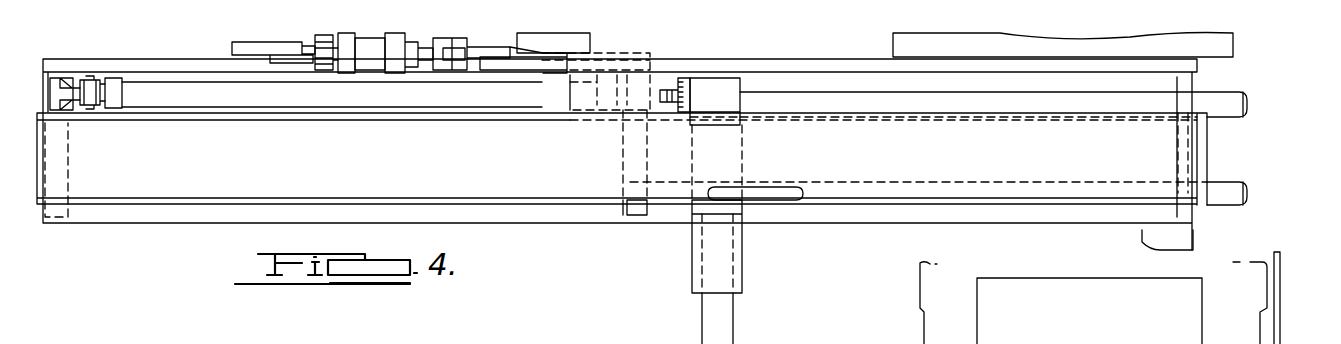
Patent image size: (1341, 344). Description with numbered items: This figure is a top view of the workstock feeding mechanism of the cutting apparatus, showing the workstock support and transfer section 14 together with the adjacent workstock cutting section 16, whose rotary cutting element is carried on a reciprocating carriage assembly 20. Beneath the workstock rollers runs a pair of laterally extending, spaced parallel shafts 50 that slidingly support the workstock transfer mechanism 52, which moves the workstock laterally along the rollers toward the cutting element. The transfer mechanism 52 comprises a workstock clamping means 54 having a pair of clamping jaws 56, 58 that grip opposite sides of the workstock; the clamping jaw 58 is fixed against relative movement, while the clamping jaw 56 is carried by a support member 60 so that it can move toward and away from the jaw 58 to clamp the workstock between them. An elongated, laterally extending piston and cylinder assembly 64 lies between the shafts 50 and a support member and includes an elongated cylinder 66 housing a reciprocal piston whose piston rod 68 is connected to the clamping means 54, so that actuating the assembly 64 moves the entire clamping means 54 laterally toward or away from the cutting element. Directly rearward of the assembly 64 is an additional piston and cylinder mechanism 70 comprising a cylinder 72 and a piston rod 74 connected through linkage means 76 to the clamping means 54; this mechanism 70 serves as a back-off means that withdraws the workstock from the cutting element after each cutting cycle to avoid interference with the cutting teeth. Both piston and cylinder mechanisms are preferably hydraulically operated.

The workstock support and transfer section 14 is at (197, 242).
The workstock cutting section 16 is at (1292, 234).
The carriage assembly 20 is at (907, 343).
The shafts 50 is at (1243, 130).
The workstock transfer mechanism 52 is at (658, 48).
The workstock clamping means 54 is at (762, 259).
The clamping jaw 56 is at (728, 203).
The clamping jaw 58 is at (732, 122).
The support member 60 is at (692, 267).
The piston and cylinder assembly 64 is at (241, 134).
The cylinder 66 is at (380, 97).
The piston rod 68 is at (662, 103).
The piston and cylinder mechanism 70 is at (339, 87).
The cylinder 72 is at (377, 67).
The piston rod 74 is at (422, 60).
The linkage means 76 is at (475, 63).